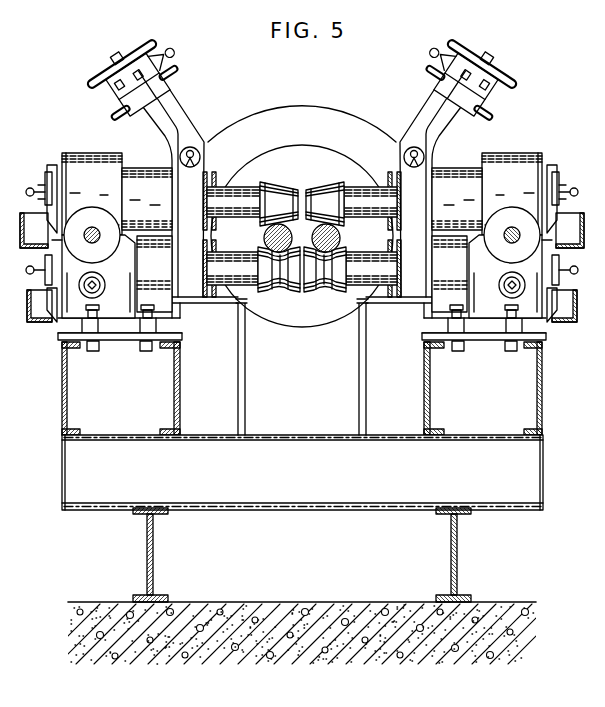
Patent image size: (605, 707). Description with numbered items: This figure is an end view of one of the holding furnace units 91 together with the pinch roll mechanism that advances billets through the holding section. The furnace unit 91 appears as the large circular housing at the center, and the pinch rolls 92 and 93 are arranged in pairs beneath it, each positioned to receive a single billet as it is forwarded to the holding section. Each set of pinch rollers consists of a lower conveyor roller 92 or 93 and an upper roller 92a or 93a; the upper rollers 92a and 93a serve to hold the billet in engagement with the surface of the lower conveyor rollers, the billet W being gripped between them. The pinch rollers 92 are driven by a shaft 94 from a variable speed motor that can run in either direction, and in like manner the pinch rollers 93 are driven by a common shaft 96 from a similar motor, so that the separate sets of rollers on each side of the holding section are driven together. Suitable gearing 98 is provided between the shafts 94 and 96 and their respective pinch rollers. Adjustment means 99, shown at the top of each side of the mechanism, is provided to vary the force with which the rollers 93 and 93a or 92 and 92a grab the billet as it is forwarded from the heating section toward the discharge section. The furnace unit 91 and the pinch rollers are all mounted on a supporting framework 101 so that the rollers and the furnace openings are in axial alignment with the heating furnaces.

The furnace unit 91 is at (296, 112).
The pinch roll 92 is at (292, 282).
The pinch roll 93 is at (337, 282).
The upper roller 92a is at (285, 187).
The upper roller 93a is at (328, 190).
The workpiece wire W is at (272, 238).
The shaft 94 is at (92, 230).
The common shaft 96 is at (512, 228).
The gearing 98 is at (88, 160).
The adjustment means 99 is at (107, 73).
The supporting framework 101 is at (315, 487).